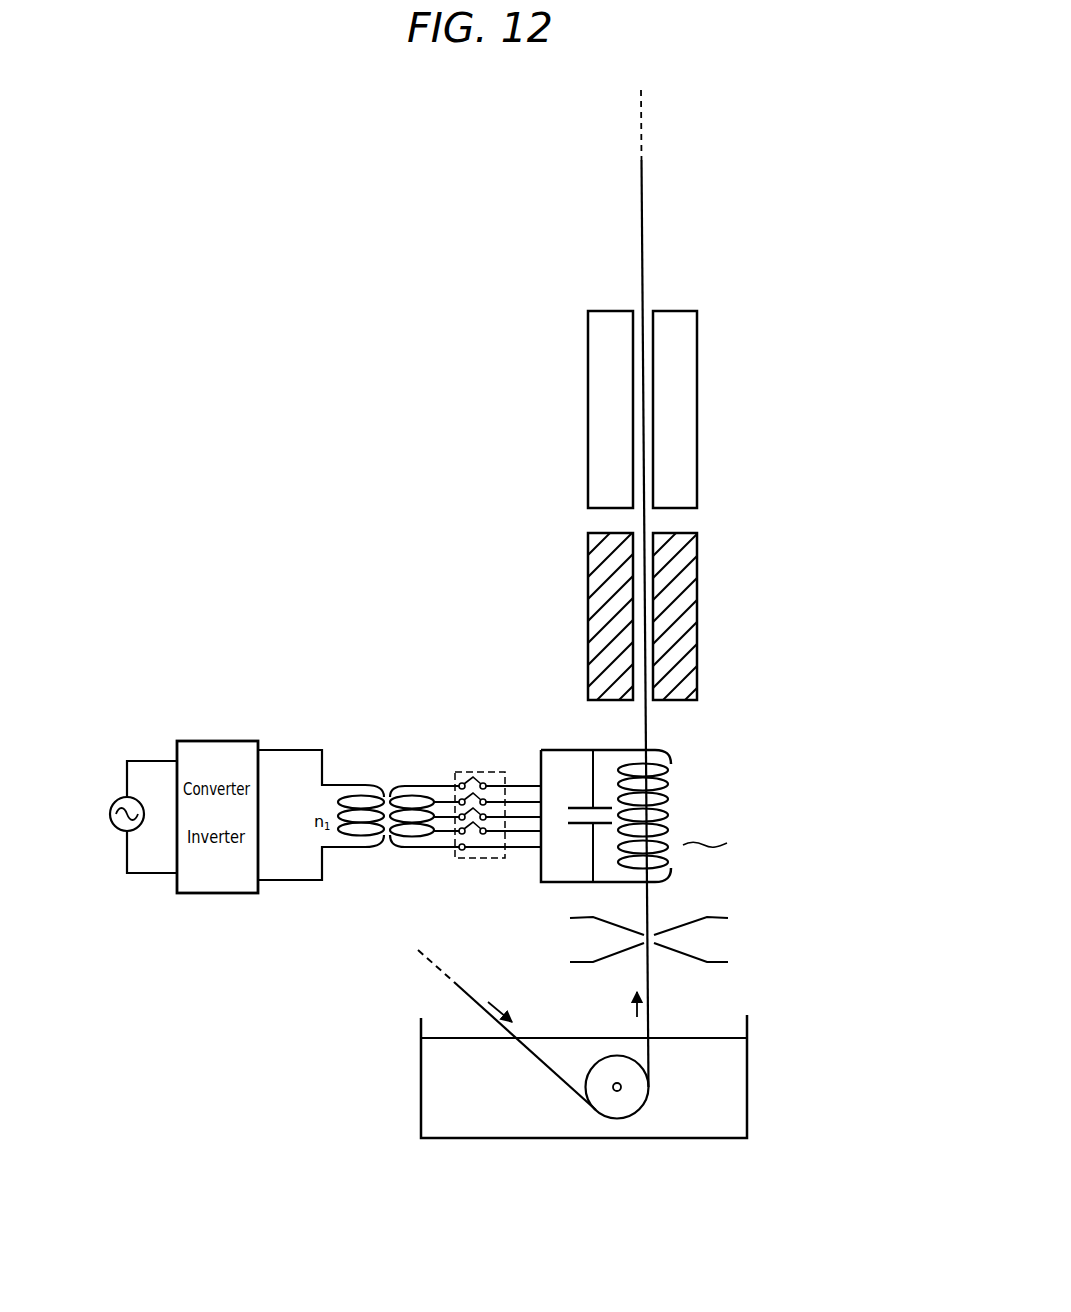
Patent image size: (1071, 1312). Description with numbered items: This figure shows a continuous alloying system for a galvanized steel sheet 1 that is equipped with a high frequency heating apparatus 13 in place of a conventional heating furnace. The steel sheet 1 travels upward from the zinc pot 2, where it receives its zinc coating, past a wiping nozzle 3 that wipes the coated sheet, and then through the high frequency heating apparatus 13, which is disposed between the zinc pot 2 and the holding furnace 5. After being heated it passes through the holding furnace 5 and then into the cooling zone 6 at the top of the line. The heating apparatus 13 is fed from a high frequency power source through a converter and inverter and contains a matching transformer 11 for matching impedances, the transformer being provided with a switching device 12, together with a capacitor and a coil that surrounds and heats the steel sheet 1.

The steel sheet 1 is at (649, 1007).
The zinc pot 2 is at (748, 1087).
The wiping nozzle 3 is at (720, 940).
The holding furnace 5 is at (698, 598).
The cooling zone 6 is at (698, 395).
The matching transformer 11 is at (385, 786).
The switching device 12 is at (479, 773).
The high frequency heating apparatus 13 is at (718, 778).